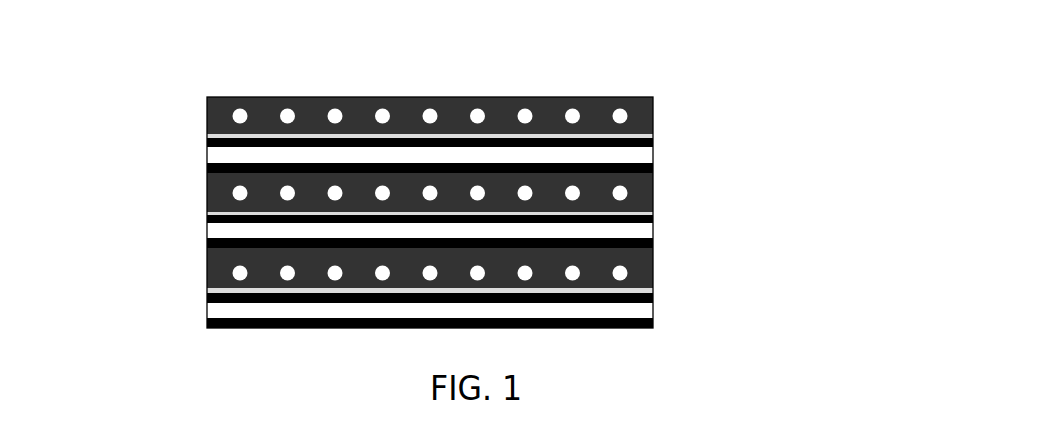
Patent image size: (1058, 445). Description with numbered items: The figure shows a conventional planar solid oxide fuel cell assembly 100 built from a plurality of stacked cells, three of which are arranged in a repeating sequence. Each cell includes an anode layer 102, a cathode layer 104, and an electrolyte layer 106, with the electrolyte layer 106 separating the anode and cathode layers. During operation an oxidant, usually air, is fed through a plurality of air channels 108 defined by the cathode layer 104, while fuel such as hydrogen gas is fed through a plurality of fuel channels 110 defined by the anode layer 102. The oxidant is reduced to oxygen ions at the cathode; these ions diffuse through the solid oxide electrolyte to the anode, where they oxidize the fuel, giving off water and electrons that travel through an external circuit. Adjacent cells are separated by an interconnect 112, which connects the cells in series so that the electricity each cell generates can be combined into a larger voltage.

The solid oxide fuel cell stack 100 is at (476, 168).
The anode layer 102 is at (658, 116).
The cathode layer 104 is at (661, 172).
The electrolyte layer 106 is at (653, 134).
The air channels 108 is at (210, 155).
The fuel channels 110 is at (322, 229).
The interconnect 112 is at (660, 186).